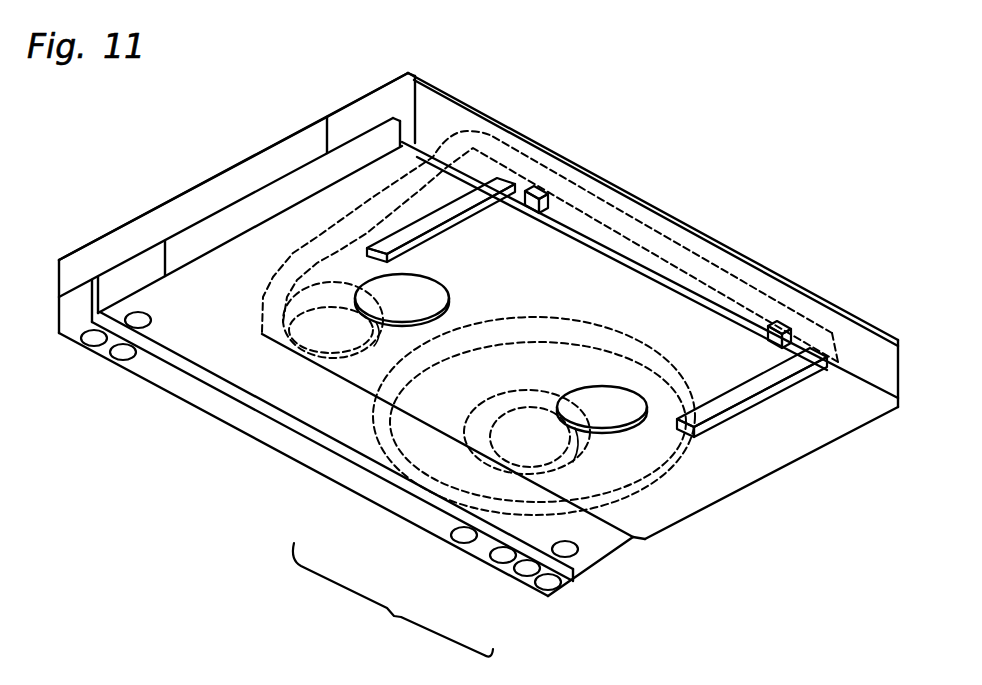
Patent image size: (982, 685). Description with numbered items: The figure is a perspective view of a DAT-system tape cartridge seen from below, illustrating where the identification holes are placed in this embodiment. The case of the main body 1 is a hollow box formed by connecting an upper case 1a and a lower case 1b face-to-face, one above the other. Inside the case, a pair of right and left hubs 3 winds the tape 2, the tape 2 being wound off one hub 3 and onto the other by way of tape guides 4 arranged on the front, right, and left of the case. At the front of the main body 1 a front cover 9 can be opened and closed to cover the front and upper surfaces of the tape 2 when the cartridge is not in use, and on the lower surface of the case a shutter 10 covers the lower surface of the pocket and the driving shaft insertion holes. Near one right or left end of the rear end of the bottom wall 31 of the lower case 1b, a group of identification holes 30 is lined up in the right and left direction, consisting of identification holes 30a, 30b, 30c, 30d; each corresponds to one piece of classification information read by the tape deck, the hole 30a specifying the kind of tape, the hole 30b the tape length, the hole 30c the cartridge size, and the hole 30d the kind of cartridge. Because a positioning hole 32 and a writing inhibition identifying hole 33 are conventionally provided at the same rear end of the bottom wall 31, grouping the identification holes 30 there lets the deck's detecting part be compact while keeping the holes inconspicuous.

The main body 1 is at (239, 154).
The upper case 1a is at (150, 222).
The lower case 1b is at (293, 444).
The tape 2 is at (684, 247).
The hub 3 is at (489, 394).
The tape guide 4 is at (497, 130).
The front cover 9 is at (367, 103).
The shutter 10 is at (740, 472).
The identification hole 30 is at (393, 600).
The identification hole 30a is at (457, 539).
The identification hole 30b is at (496, 560).
The identification hole 30c is at (522, 577).
The identification hole 30d is at (543, 590).
The bottom wall 31 is at (601, 543).
The positioning hole 32 is at (91, 345).
The writing inhibition identifying hole 33 is at (121, 361).